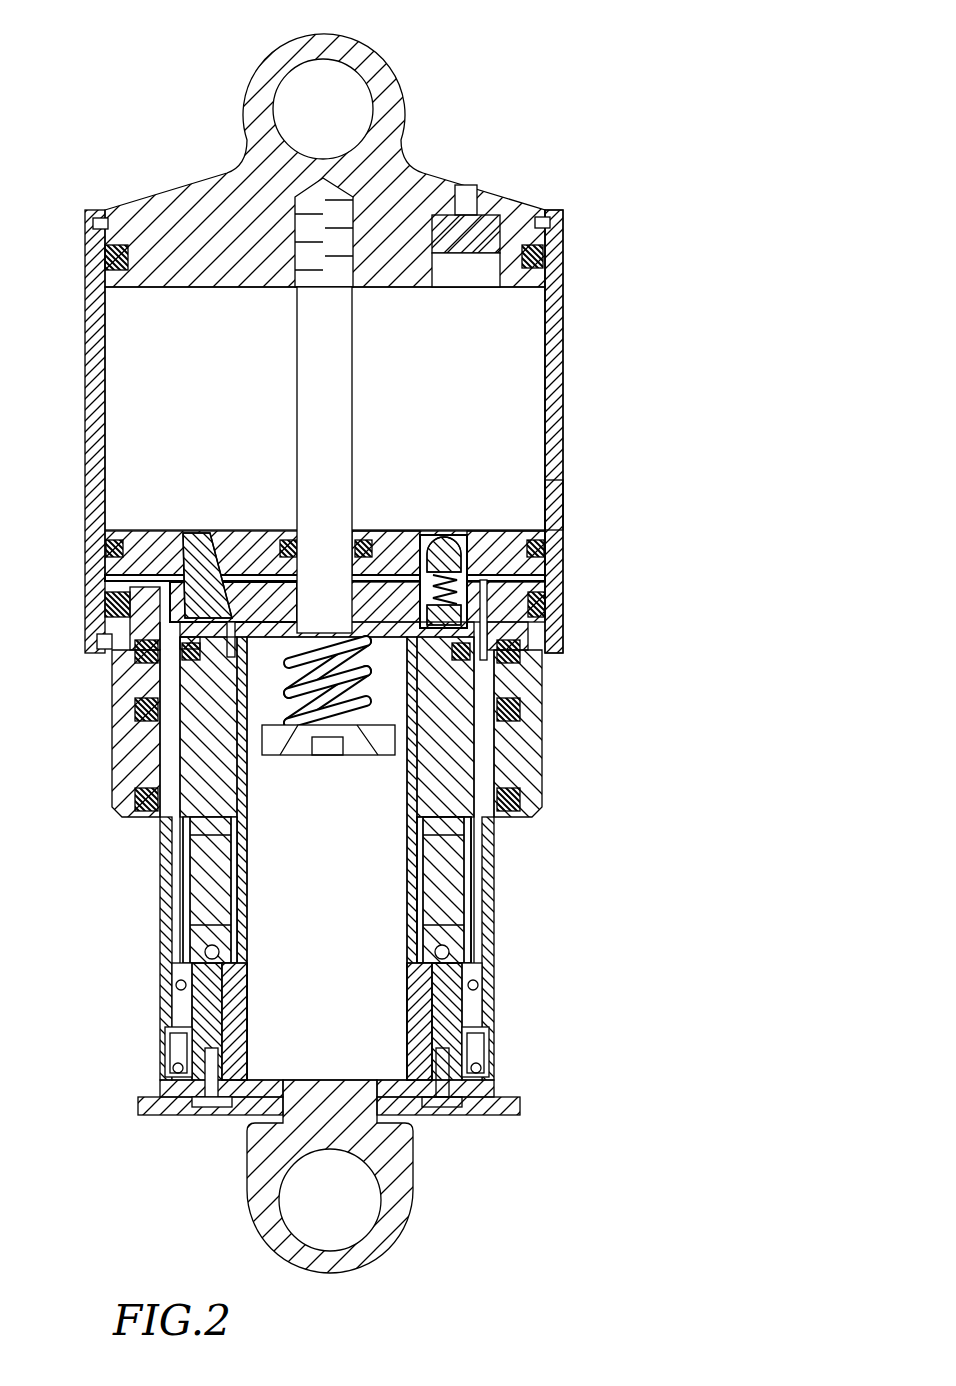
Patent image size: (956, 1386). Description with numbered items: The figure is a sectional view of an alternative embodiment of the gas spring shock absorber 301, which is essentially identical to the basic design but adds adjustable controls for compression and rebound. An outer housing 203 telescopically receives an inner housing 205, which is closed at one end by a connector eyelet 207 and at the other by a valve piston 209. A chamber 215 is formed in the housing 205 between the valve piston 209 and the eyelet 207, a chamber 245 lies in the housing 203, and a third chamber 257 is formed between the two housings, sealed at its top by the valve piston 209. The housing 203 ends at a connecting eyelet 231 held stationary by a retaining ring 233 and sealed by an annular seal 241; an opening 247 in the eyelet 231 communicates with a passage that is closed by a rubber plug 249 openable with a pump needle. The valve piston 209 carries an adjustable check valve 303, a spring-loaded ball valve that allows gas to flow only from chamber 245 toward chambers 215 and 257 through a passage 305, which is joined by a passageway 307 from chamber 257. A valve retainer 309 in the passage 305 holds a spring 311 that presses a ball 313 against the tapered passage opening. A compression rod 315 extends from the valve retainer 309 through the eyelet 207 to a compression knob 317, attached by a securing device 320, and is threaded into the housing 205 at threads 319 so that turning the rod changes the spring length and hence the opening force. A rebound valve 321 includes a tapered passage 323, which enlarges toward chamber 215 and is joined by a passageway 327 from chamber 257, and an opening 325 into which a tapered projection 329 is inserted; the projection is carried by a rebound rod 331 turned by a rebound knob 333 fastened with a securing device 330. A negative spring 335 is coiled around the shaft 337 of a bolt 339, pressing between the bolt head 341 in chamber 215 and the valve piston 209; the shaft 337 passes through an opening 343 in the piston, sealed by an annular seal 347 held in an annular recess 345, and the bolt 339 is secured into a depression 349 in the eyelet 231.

The housing 203 is at (565, 445).
The housing 205 is at (496, 937).
The connector eyelet 207 is at (365, 1255).
The valve piston 209 is at (560, 520).
The chamber 215 is at (347, 942).
The connecting eyelet 231 is at (331, 44).
The retaining ring 233 is at (549, 212).
The annular seal 241 is at (565, 262).
The chamber 245 is at (220, 399).
The opening 247 is at (467, 190).
The plug 249 is at (462, 287).
The third chamber 257 is at (546, 570).
The shock absorber 301 is at (603, 376).
The adjustable check valve 303 is at (533, 528).
The passage 305 is at (443, 535).
The passageway 307 is at (440, 582).
The valve retainer 309 is at (473, 657).
The spring 311 is at (548, 612).
The ball 313 is at (455, 540).
The compression rod 315 is at (455, 1002).
The compression knob 317 is at (500, 1100).
The threads 319 is at (470, 878).
The securing device 320 is at (190, 900).
The rebound valve 321 is at (231, 495).
The tapered passage 323 is at (106, 560).
The opening 325 is at (206, 590).
The passageway 327 is at (110, 607).
The tapered projection 329 is at (185, 600).
The securing device 330 is at (207, 1108).
The rebound rod 331 is at (198, 768).
The rebound knob 333 is at (152, 1100).
The negative spring 335 is at (345, 720).
The shaft 337 is at (243, 692).
The bolt 339 is at (313, 322).
The head 341 is at (268, 745).
The opening 343 is at (308, 522).
The annular recess 345 is at (362, 545).
The annular seal 347 is at (410, 553).
The depression 349 is at (305, 205).